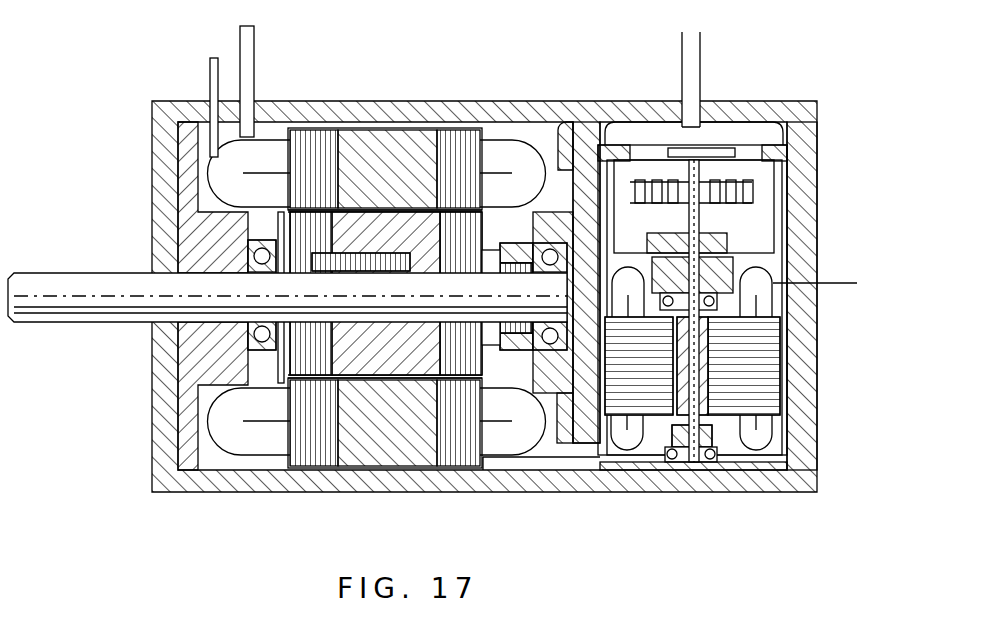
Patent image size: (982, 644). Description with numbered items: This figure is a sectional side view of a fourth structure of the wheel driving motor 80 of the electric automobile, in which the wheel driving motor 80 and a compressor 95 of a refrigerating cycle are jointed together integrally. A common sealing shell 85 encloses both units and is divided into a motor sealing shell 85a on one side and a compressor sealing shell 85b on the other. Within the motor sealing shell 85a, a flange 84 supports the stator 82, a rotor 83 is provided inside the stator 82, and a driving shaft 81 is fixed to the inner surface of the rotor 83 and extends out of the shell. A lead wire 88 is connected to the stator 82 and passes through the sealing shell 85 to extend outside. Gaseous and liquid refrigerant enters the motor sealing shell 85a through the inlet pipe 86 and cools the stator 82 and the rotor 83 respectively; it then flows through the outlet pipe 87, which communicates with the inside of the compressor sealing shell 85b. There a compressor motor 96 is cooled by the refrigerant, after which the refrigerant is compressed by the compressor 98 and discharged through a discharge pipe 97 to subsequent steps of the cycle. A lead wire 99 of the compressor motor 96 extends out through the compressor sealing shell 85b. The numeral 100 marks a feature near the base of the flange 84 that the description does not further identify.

The wheel driving motor 80 is at (450, 295).
The driving shaft 81 is at (395, 312).
The stator 82 is at (395, 140).
The rotor 83 is at (392, 222).
The flange 84 is at (565, 130).
The sealing shell 85 is at (330, 492).
The motor sealing shell 85a is at (165, 200).
The compressor sealing shell 85b is at (808, 128).
The inlet pipe 86 is at (256, 84).
The outlet pipe 87 is at (590, 452).
The lead wire 88 is at (206, 80).
The compressor 95 is at (755, 494).
The compressor motor 96 is at (705, 392).
The discharge pipe 97 is at (700, 70).
The compressor 98 is at (703, 188).
The lead wire of the compressor motor 99 is at (848, 283).
The wall step 100 is at (583, 420).